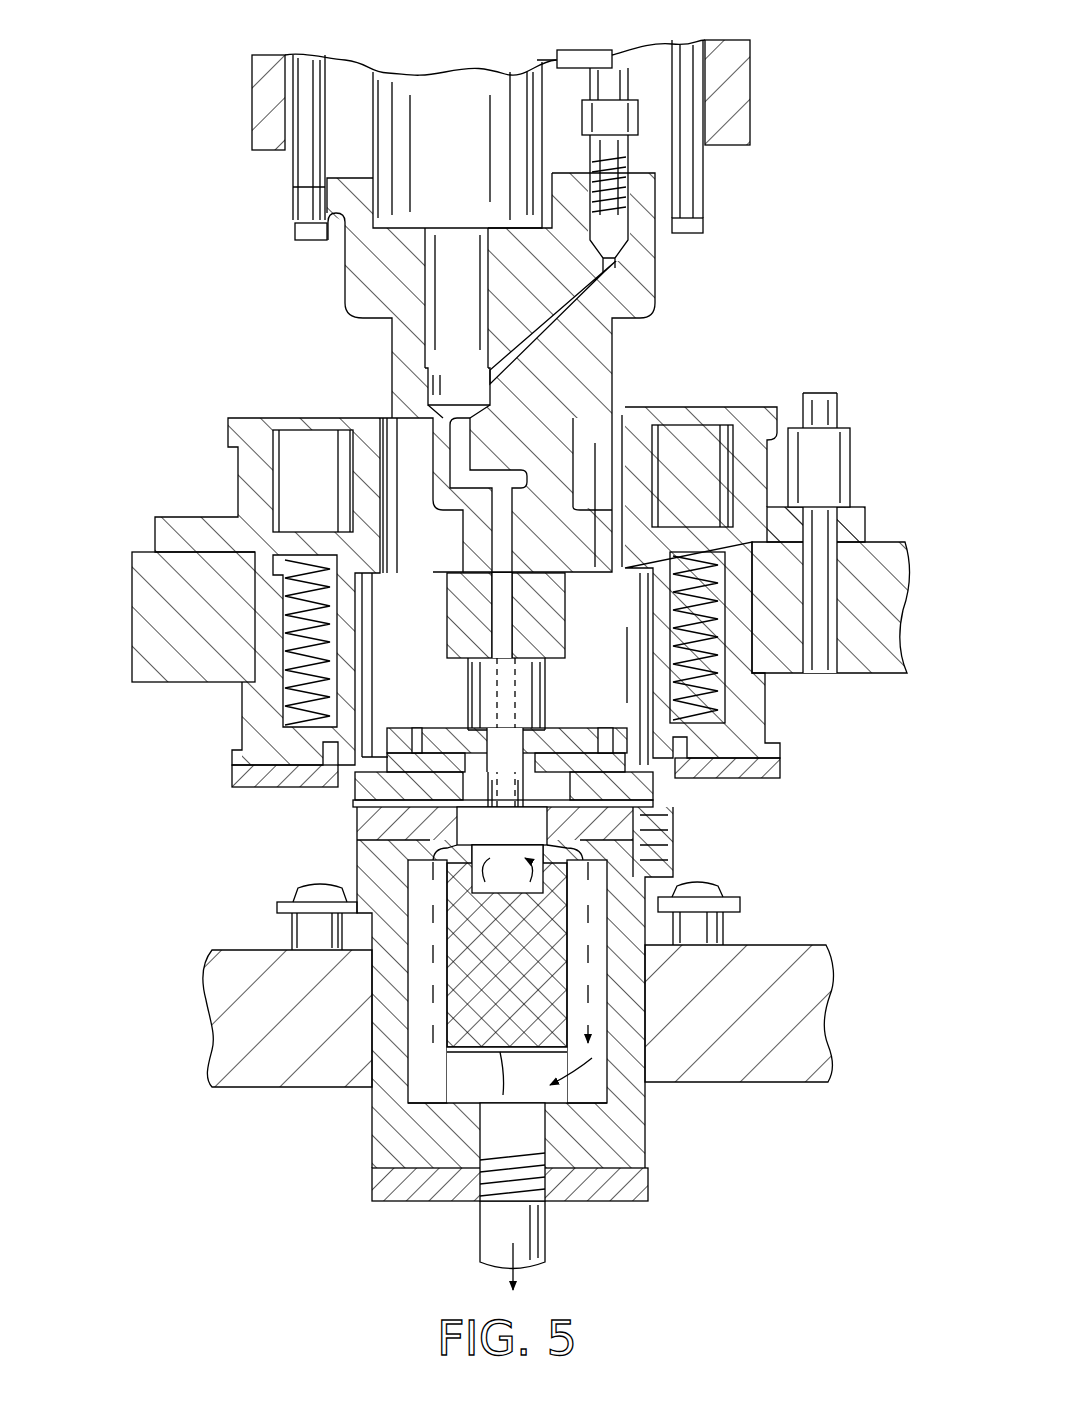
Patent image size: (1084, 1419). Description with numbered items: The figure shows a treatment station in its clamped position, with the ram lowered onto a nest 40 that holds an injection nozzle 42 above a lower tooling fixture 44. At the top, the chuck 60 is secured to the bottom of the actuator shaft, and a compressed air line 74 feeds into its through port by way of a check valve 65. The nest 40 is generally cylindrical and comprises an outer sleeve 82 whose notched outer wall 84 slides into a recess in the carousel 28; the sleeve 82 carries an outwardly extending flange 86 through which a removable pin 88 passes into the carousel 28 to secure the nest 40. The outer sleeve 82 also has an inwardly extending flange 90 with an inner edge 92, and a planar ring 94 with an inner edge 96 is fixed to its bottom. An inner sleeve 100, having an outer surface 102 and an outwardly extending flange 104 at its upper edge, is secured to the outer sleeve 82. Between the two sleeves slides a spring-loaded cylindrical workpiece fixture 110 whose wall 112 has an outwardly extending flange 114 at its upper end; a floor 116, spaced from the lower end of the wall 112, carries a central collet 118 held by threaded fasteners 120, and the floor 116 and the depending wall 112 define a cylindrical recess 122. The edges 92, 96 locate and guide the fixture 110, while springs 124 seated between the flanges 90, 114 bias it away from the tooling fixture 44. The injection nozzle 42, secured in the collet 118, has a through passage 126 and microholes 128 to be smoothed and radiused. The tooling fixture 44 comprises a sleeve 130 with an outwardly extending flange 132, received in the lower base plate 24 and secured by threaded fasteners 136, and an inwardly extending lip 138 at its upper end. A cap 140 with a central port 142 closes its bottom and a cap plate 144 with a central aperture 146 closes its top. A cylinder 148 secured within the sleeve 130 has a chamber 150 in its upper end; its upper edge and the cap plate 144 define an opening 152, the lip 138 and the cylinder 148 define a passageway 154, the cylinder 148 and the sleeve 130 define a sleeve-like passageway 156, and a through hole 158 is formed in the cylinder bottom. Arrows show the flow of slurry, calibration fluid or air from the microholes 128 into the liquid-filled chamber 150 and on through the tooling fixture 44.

The lower base plate 24 is at (810, 1010).
The carousel 28 is at (882, 552).
The nest 40 is at (836, 717).
The injection nozzle 42 is at (570, 668).
The lower tooling fixture 44 is at (358, 1124).
The chuck 60 is at (614, 325).
The check valve 65 is at (632, 195).
The compressed air line 74 is at (619, 78).
The outer sleeve 82 is at (757, 440).
The notched outer wall 84 is at (758, 645).
The outwardly extending flange 86 is at (862, 508).
The removable pin 88 is at (850, 456).
The inwardly extending flange 90 is at (275, 750).
The inner edge 92 is at (655, 718).
The planar ring 94 is at (782, 768).
The inner edge 96 is at (668, 786).
The inner sleeve 100 is at (370, 456).
The outer surface 102 is at (345, 487).
The outwardly extending flange 104 is at (283, 415).
The workpiece fixture 110 is at (388, 674).
The wall 112 is at (348, 630).
The outwardly extending flange 114 is at (312, 543).
The floor 116 is at (367, 790).
The central collet 118 is at (566, 726).
The threaded fasteners 120 is at (547, 672).
The cylindrical recess 122 is at (345, 862).
The springs 124 is at (270, 600).
The through passage 126 is at (492, 703).
The microholes 128 is at (492, 893).
The sleeve 130 is at (634, 1133).
The outwardly extending flange 132 is at (740, 923).
The threaded fasteners 136 is at (293, 920).
The lip 138 is at (628, 885).
The cap 140 is at (424, 1204).
The central port 142 is at (522, 1145).
The cap plate 144 is at (360, 820).
The central aperture 146 is at (440, 842).
The cylinder 148 is at (530, 1012).
The chamber 150 is at (520, 898).
The opening 152 is at (612, 826).
The passageway 154 is at (618, 860).
The sleeve-like passageway 156 is at (410, 1018).
The through hole 158 is at (525, 1083).